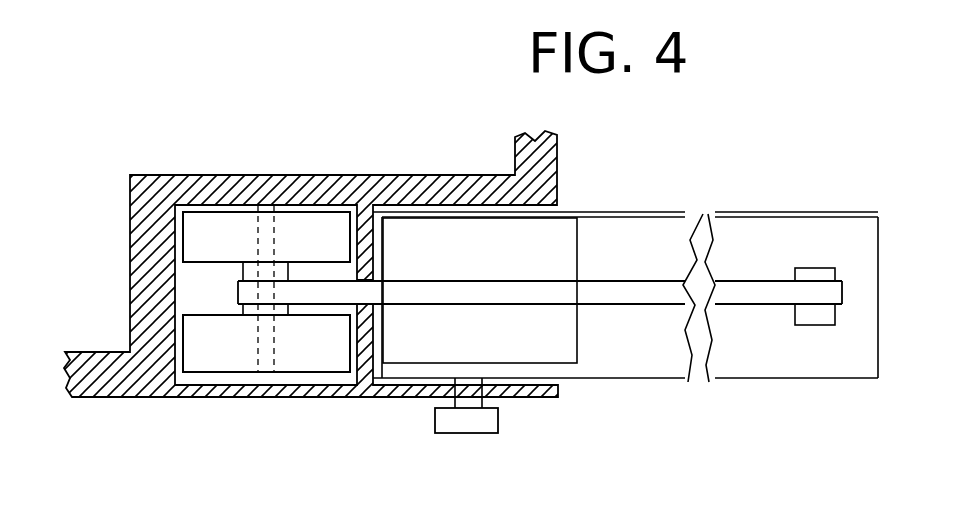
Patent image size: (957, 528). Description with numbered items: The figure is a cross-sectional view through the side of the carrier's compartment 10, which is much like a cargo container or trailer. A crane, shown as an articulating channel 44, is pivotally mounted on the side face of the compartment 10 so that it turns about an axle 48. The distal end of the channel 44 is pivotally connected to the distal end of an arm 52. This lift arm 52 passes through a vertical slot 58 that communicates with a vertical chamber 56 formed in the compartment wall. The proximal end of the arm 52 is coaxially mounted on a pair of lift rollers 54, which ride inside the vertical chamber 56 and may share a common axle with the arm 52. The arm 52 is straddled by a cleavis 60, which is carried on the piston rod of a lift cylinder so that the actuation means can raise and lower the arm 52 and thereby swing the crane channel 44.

The compartment 10 is at (108, 352).
The articulating channel 44 is at (650, 380).
The axle 48 is at (473, 422).
The arm 52 is at (738, 293).
The lift rollers 54 is at (215, 225).
The vertical chamber 56 is at (192, 291).
The vertical slot 58 is at (278, 240).
The cleavis 60 is at (290, 310).